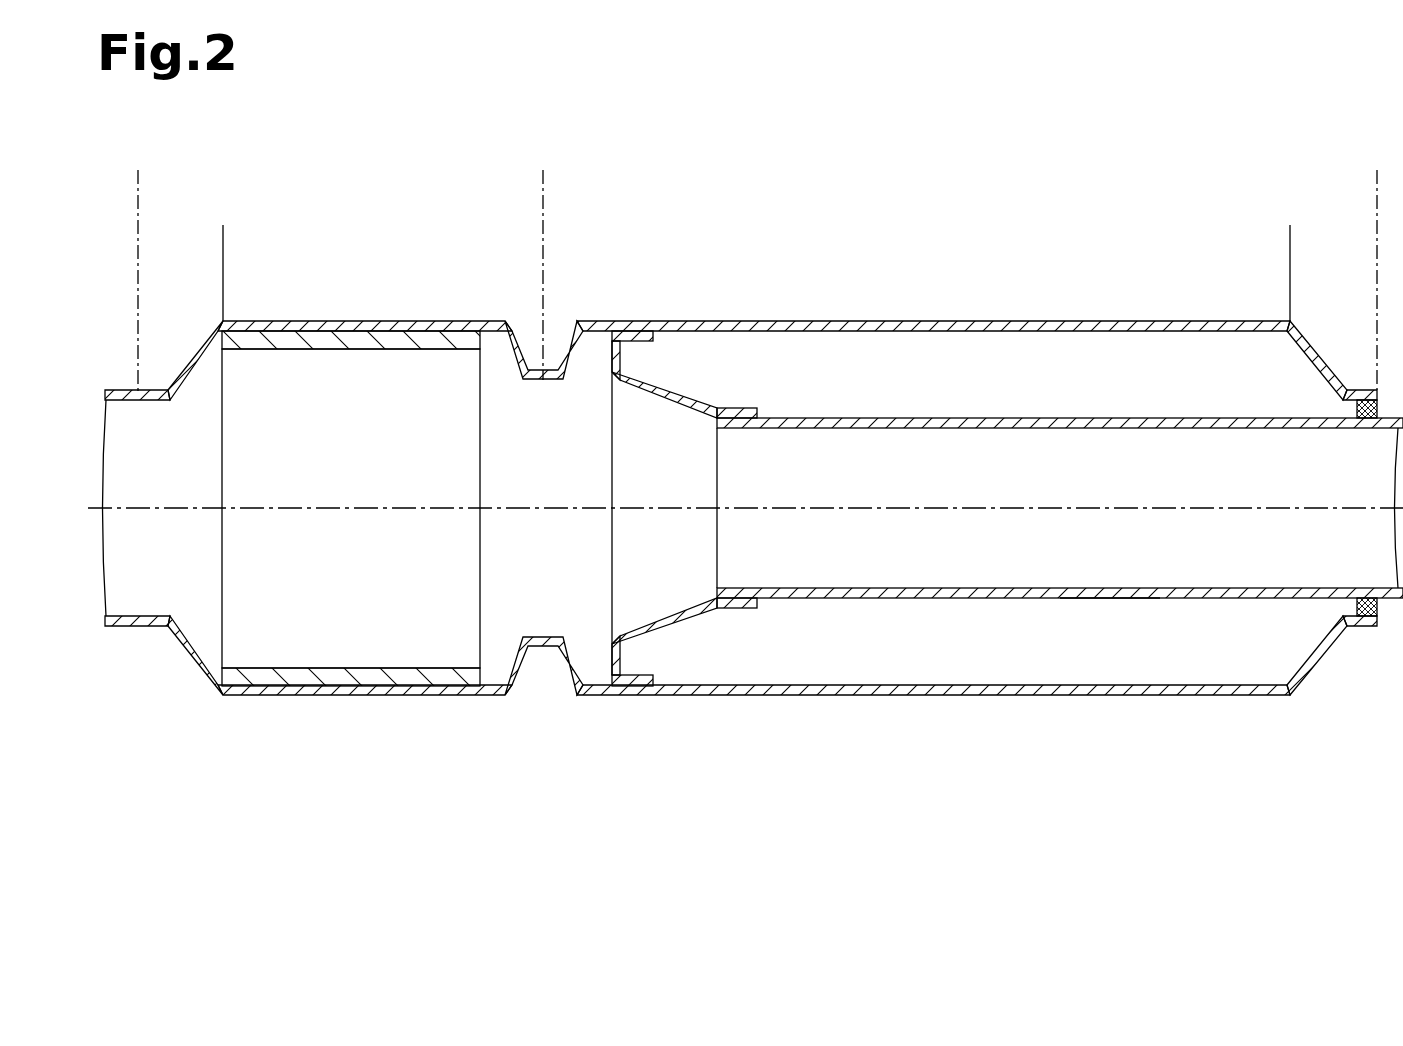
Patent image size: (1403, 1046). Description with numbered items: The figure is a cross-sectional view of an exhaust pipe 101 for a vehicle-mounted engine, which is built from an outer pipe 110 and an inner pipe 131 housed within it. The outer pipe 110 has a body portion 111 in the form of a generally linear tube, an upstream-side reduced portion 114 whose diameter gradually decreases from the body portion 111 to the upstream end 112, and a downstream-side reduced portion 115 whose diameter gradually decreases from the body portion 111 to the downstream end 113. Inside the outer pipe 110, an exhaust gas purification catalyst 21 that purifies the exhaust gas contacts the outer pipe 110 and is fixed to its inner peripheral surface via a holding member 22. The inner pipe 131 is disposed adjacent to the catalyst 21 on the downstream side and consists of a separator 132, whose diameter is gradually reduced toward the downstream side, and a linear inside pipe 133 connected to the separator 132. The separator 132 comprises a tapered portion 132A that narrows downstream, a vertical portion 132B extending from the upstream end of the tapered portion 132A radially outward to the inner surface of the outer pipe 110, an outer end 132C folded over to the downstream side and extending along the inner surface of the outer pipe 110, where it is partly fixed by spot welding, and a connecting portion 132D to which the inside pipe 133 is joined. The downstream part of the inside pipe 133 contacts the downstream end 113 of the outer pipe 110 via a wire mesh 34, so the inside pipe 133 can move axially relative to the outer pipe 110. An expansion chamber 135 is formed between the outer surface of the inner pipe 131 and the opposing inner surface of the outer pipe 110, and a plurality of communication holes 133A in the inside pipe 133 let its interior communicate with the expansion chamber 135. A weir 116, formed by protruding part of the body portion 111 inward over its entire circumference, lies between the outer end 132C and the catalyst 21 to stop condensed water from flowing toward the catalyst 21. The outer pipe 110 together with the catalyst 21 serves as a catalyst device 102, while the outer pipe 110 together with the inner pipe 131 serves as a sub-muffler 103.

The exhaust pipe 101 is at (759, 803).
The catalyst device 102 is at (139, 183).
The sub-muffler 103 is at (544, 183).
The outer pipe 110 is at (890, 322).
The body portion 111 is at (224, 238).
The upstream end 112 is at (146, 645).
The downstream end 113 is at (1356, 642).
The upstream-side reduced portion 114 is at (193, 331).
The downstream-side reduced portion 115 is at (1330, 335).
The weir 116 is at (533, 660).
The inner pipe 131 is at (631, 437).
The separator 132 is at (677, 549).
The tapered portion 132A is at (700, 635).
The vertical portion 132B is at (602, 633).
The outer end 132C is at (644, 704).
The connecting portion 132D is at (749, 626).
The inside pipe 133 is at (797, 588).
The communication holes 133A is at (1153, 590).
The expansion chamber 135 is at (940, 393).
The exhaust gas purification catalyst 21 is at (481, 541).
The holding member 22 is at (468, 340).
The wire mesh 34 is at (1368, 598).